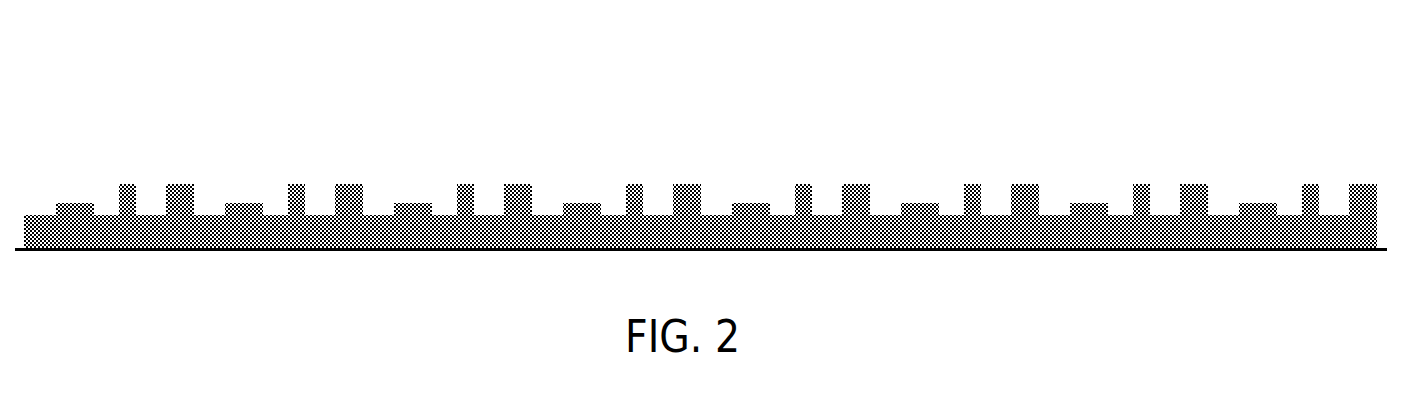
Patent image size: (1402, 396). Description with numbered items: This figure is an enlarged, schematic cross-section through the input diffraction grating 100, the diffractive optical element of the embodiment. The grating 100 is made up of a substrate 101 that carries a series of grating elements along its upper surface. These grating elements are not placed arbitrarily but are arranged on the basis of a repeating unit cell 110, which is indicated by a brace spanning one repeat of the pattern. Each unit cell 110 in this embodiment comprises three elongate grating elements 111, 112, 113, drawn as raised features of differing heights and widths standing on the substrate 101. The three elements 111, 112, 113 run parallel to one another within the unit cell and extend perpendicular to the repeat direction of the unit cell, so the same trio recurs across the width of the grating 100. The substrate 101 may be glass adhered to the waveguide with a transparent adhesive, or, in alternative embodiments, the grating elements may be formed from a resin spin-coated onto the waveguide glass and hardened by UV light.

The input diffraction grating 100 is at (701, 177).
The substrate 101 is at (146, 245).
The unit cell 110 is at (361, 147).
The grating element 111 is at (582, 196).
The grating element 112 is at (630, 177).
The grating element 113 is at (687, 177).